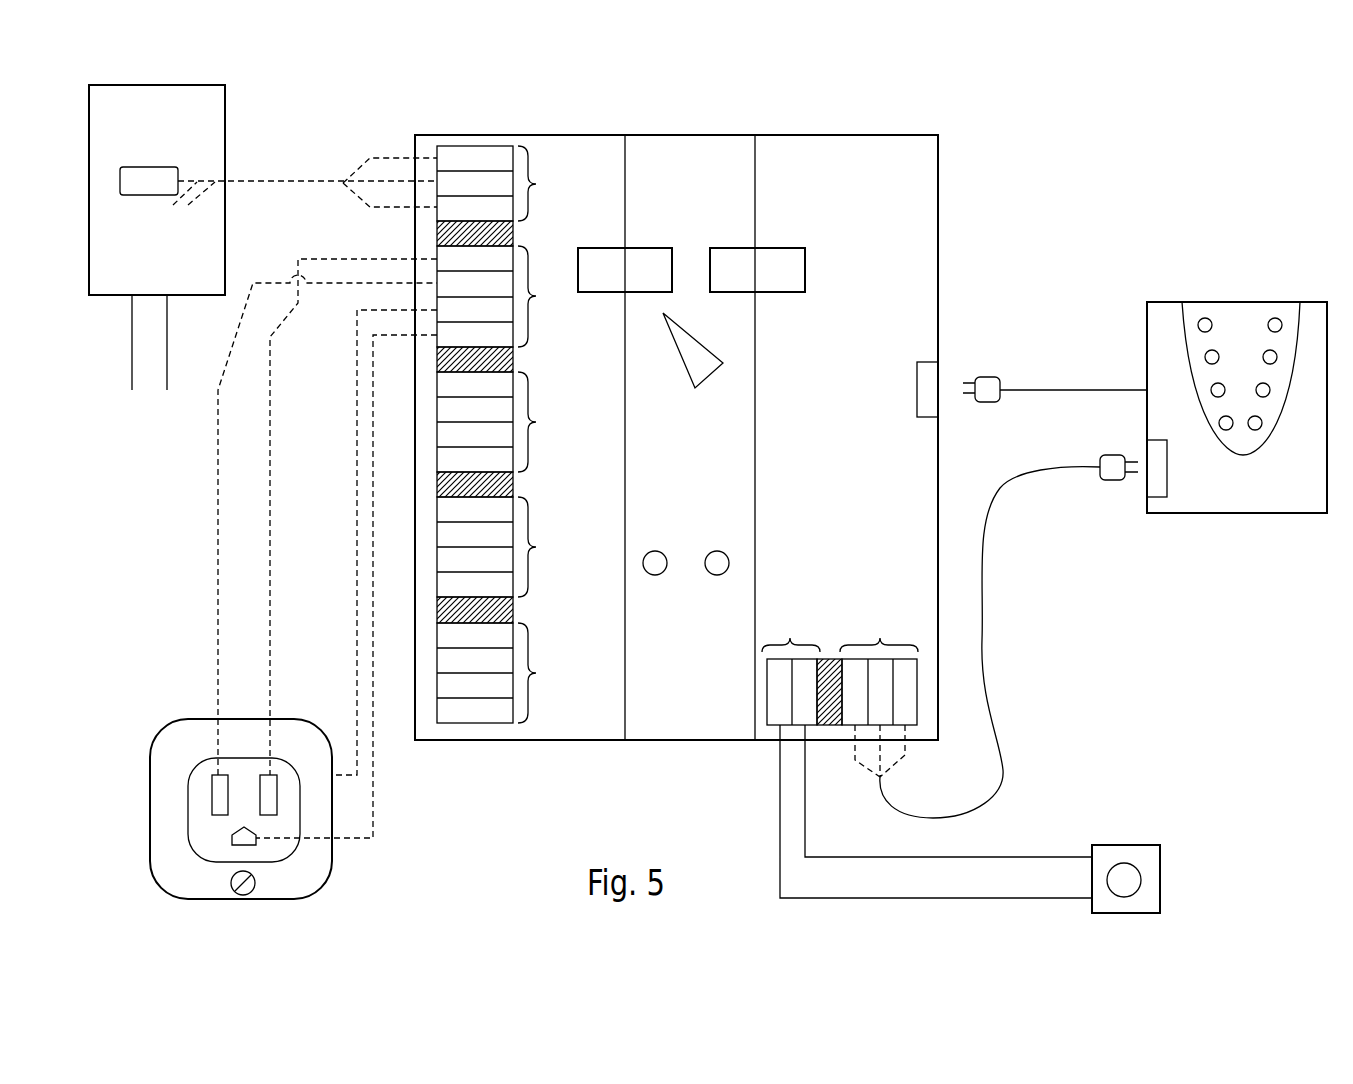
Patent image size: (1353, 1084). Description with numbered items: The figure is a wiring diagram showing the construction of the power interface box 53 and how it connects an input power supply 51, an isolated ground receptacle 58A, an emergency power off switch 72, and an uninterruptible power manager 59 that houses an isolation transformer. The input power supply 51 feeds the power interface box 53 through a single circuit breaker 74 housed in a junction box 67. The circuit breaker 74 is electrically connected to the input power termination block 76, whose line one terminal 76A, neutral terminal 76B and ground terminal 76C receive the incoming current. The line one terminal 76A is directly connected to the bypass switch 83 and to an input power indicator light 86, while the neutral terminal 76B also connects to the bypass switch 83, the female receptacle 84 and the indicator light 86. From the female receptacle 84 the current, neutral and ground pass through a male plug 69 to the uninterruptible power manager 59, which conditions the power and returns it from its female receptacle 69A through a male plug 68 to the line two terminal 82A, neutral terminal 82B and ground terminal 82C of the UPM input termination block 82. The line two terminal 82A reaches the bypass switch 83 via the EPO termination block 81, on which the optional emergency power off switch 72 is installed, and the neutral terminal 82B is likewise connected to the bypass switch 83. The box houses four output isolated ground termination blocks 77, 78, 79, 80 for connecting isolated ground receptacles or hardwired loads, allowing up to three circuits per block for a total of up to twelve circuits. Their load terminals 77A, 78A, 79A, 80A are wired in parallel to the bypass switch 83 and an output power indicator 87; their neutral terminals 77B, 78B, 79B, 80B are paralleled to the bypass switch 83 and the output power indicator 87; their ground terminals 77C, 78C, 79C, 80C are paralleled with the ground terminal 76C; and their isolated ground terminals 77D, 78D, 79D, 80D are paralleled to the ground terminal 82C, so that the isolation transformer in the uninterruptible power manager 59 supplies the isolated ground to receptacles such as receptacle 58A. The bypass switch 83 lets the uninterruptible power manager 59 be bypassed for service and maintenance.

The input power supply 51 is at (138, 313).
The power interface box 53 is at (702, 153).
The isolated ground receptacle 58A is at (305, 878).
The uninterruptible power manager 59 is at (1250, 313).
The junction box 67 is at (225, 137).
The male plug 68 is at (1112, 478).
The male plug 69 is at (990, 377).
The female receptacle 69A is at (1163, 478).
The emergency power off switch 72 is at (1152, 890).
The circuit breaker 74 is at (168, 167).
The input power termination block 76 is at (498, 184).
The line one terminal 76A is at (440, 156).
The neutral terminal 76B is at (440, 183).
The ground terminal 76C is at (440, 209).
The output isolated ground termination block 77 is at (498, 297).
The load terminal 77A is at (440, 258).
The neutral terminal 77B is at (440, 284).
The ground terminal 77C is at (440, 310).
The isolated ground terminal 77D is at (440, 335).
The output isolated ground termination block 78 is at (498, 422).
The load terminal 78A is at (440, 385).
The neutral terminal 78B is at (440, 410).
The ground terminal 78C is at (440, 435).
The isolated ground terminal 78D is at (440, 460).
The output isolated ground termination block 79 is at (498, 547).
The load terminal 79A is at (440, 510).
The neutral terminal 79B is at (440, 535).
The ground terminal 79C is at (440, 560).
The isolated ground terminal 79D is at (440, 585).
The output isolated ground termination block 80 is at (498, 673).
The load terminal 80A is at (440, 636).
The neutral terminal 80B is at (440, 661).
The ground terminal 80C is at (440, 686).
The isolated ground terminal 80D is at (440, 711).
The EPO termination block 81 is at (791, 666).
The UPM input termination block 82 is at (879, 666).
The line two terminal 82A is at (848, 718).
The neutral terminal 82B is at (882, 718).
The ground terminal 82C is at (912, 715).
The bypass switch 83 is at (703, 350).
The female receptacle 84 is at (932, 377).
The input power indicator light 86 is at (652, 576).
The output power indicator 87 is at (721, 576).